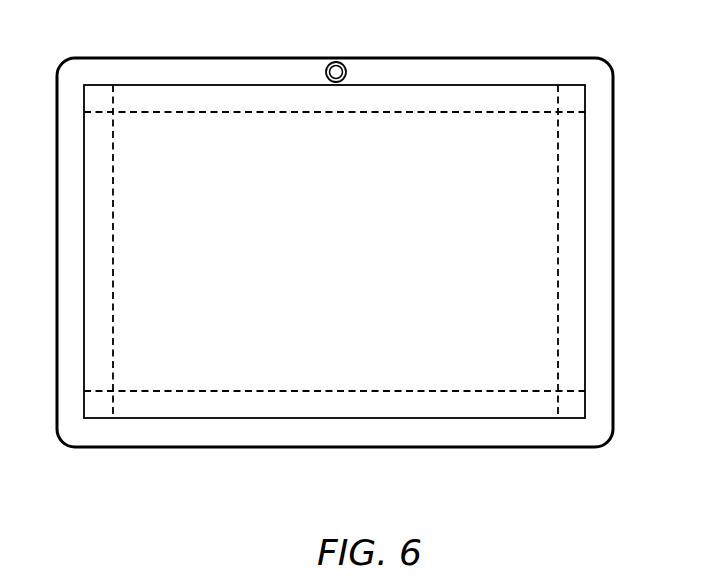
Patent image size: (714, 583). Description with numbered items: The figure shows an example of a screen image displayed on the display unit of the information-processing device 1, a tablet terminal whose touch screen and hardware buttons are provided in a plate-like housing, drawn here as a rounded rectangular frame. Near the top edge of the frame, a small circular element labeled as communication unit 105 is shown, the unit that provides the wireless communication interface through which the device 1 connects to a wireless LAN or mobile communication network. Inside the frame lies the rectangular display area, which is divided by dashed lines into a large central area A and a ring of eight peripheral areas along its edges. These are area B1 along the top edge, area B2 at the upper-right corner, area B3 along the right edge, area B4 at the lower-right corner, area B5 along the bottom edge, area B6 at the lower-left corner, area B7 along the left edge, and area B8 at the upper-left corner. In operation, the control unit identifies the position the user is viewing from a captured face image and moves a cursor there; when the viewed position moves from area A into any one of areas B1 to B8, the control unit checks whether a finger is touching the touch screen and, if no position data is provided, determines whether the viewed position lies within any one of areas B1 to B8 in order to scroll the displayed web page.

The information-processing device 1 is at (614, 220).
The area A is at (537, 298).
The communication unit 105 is at (336, 62).
The area B1 is at (462, 98).
The area B2 is at (568, 100).
The area B3 is at (572, 165).
The area B4 is at (569, 410).
The area B5 is at (373, 408).
The area B6 is at (97, 405).
The area B7 is at (100, 252).
The area B8 is at (102, 95).